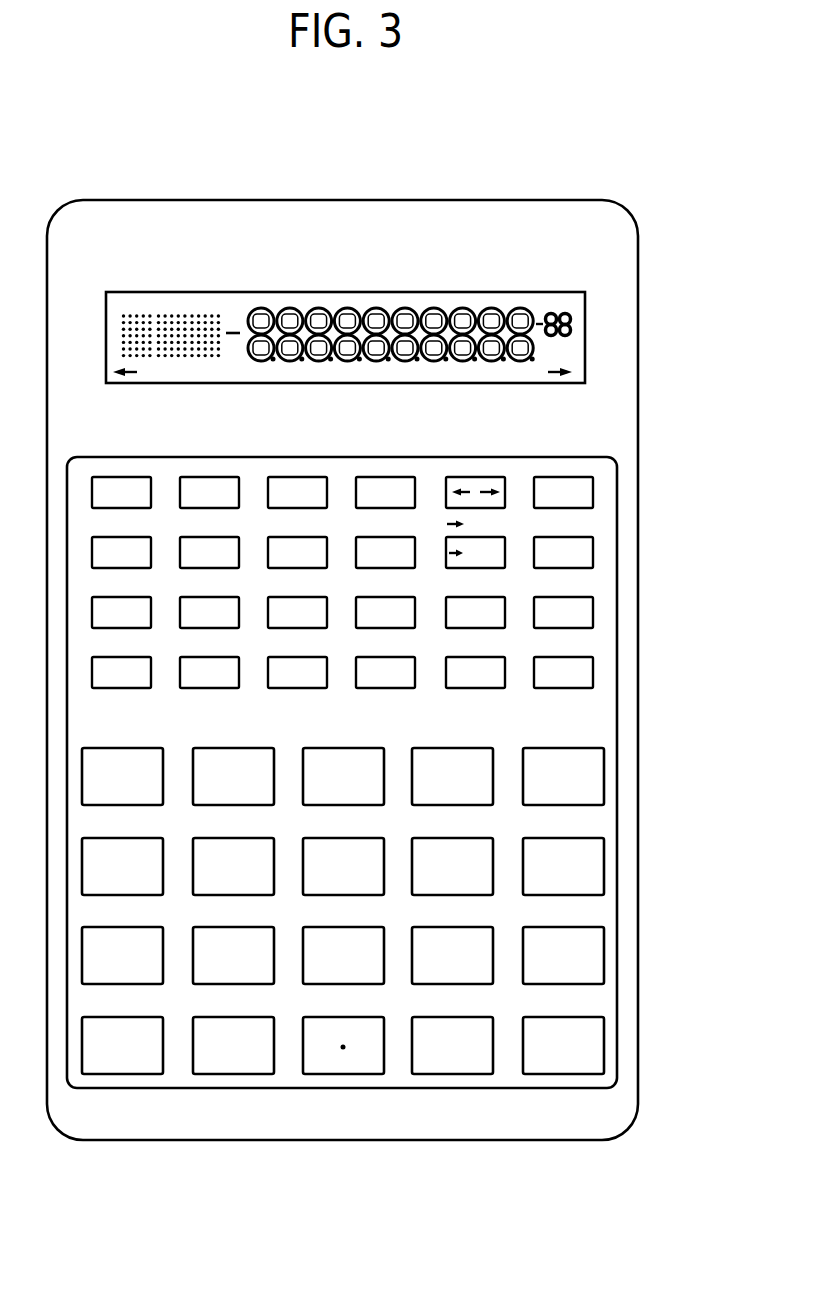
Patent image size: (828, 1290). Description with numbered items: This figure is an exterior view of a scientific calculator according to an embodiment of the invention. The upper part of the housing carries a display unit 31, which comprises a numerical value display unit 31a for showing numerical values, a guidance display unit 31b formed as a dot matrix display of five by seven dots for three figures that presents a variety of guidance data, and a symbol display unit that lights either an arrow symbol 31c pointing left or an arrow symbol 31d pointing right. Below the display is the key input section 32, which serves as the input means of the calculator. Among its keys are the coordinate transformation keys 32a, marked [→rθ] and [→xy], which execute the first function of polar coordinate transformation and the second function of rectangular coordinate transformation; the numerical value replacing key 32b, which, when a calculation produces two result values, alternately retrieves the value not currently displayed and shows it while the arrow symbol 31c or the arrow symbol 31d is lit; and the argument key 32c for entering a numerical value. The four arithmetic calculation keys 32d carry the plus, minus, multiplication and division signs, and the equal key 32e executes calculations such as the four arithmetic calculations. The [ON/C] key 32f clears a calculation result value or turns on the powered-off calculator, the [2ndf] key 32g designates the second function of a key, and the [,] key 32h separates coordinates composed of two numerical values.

The display unit 31 is at (571, 292).
The numerical value display unit 31a is at (463, 310).
The guidance display unit 31b is at (138, 318).
The arrow symbol [←] 31c is at (130, 378).
The arrow symbol [→] 31d is at (560, 378).
The key input section 32 is at (617, 727).
The coordinate transformation keys 32a is at (478, 568).
The numerical value replacing key 32b is at (460, 477).
The argument key 32c is at (113, 748).
The four arithmetic calculation keys 32d is at (477, 838).
The equal key 32e is at (548, 1073).
The [ON/C] key 32f is at (568, 477).
The [2ndf] key 32g is at (132, 477).
The [,] key 32h is at (392, 568).